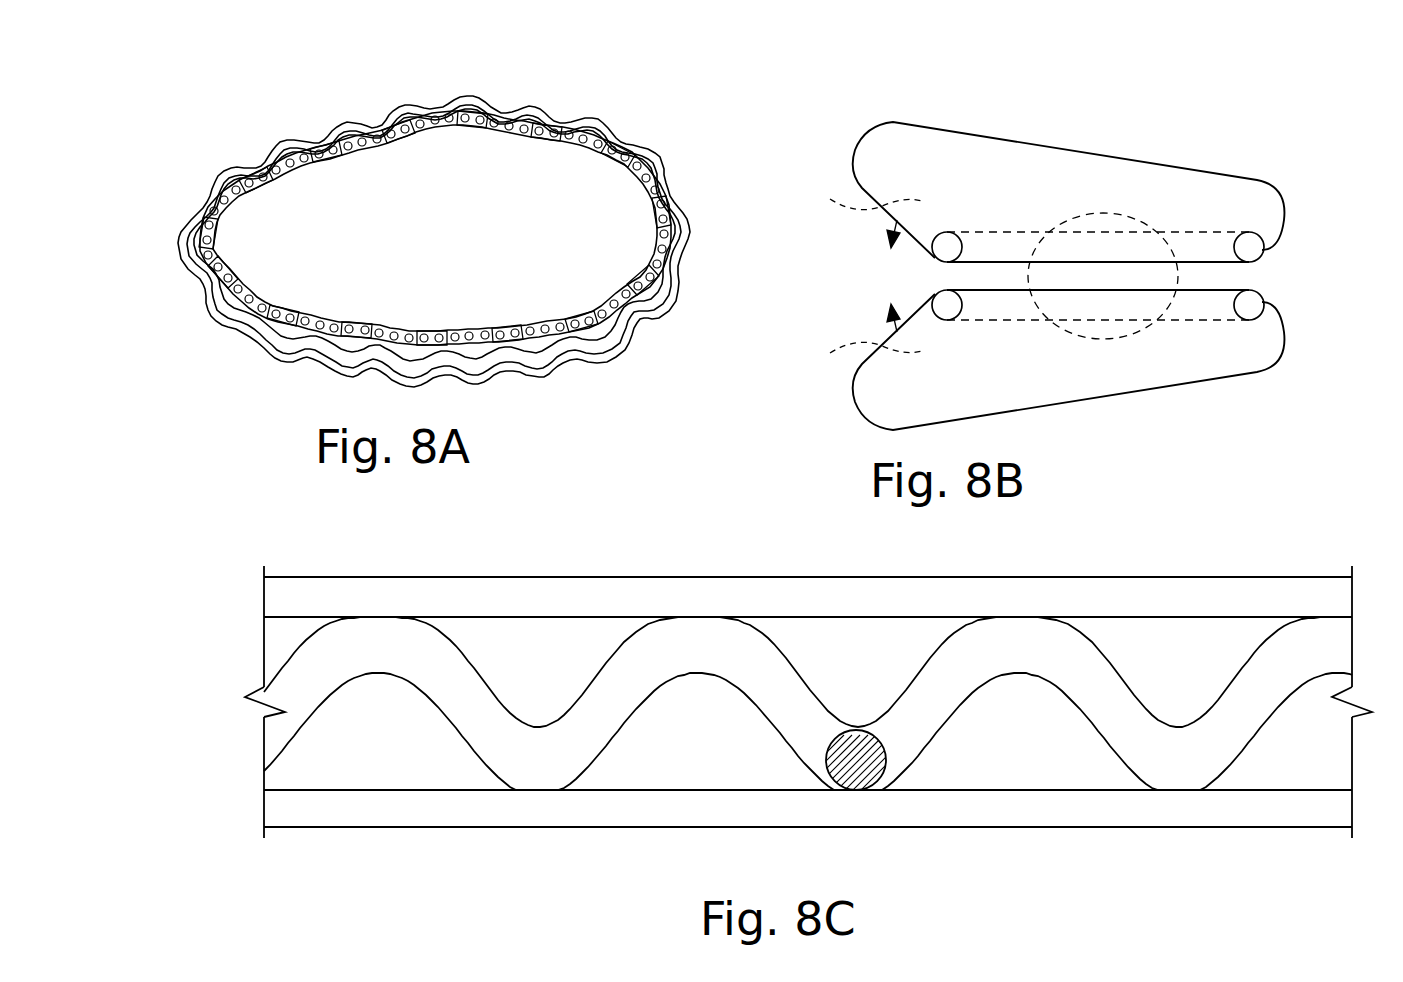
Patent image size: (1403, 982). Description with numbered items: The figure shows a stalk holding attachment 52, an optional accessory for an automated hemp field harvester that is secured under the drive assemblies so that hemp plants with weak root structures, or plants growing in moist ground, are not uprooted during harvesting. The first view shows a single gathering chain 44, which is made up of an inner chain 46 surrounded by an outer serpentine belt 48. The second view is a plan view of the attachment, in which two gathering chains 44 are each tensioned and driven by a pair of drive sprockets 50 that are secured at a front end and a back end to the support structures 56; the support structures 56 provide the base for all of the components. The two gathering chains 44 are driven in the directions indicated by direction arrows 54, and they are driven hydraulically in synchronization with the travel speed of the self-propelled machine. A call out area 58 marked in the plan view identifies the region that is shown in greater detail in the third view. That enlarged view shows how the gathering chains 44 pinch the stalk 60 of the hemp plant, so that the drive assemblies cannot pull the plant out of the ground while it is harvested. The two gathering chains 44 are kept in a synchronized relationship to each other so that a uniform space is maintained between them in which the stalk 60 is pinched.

In FIG. 8A, the gathering chain 44 is at (460, 213).
In FIG. 8B, the gathering chain 44 is at (997, 215).
In FIG. 8C, the gathering chain 44 is at (532, 717).
In FIG. 8A, the inner chain 46 is at (645, 197).
In FIG. 8A, the outer serpentine belt 48 is at (604, 342).
In FIG. 8B, the drive sprockets 50 is at (933, 300).
In FIG. 8B, the stalk holding attachment 52 is at (1077, 255).
In FIG. 8B, the direction arrows 54 is at (862, 276).
In FIG. 8B, the support structures 56 is at (1118, 157).
In FIG. 8C, the support structures 56 is at (726, 577).
In FIG. 8B, the call out area 58 is at (1140, 215).
In FIG. 8C, the stalk 60 is at (856, 719).